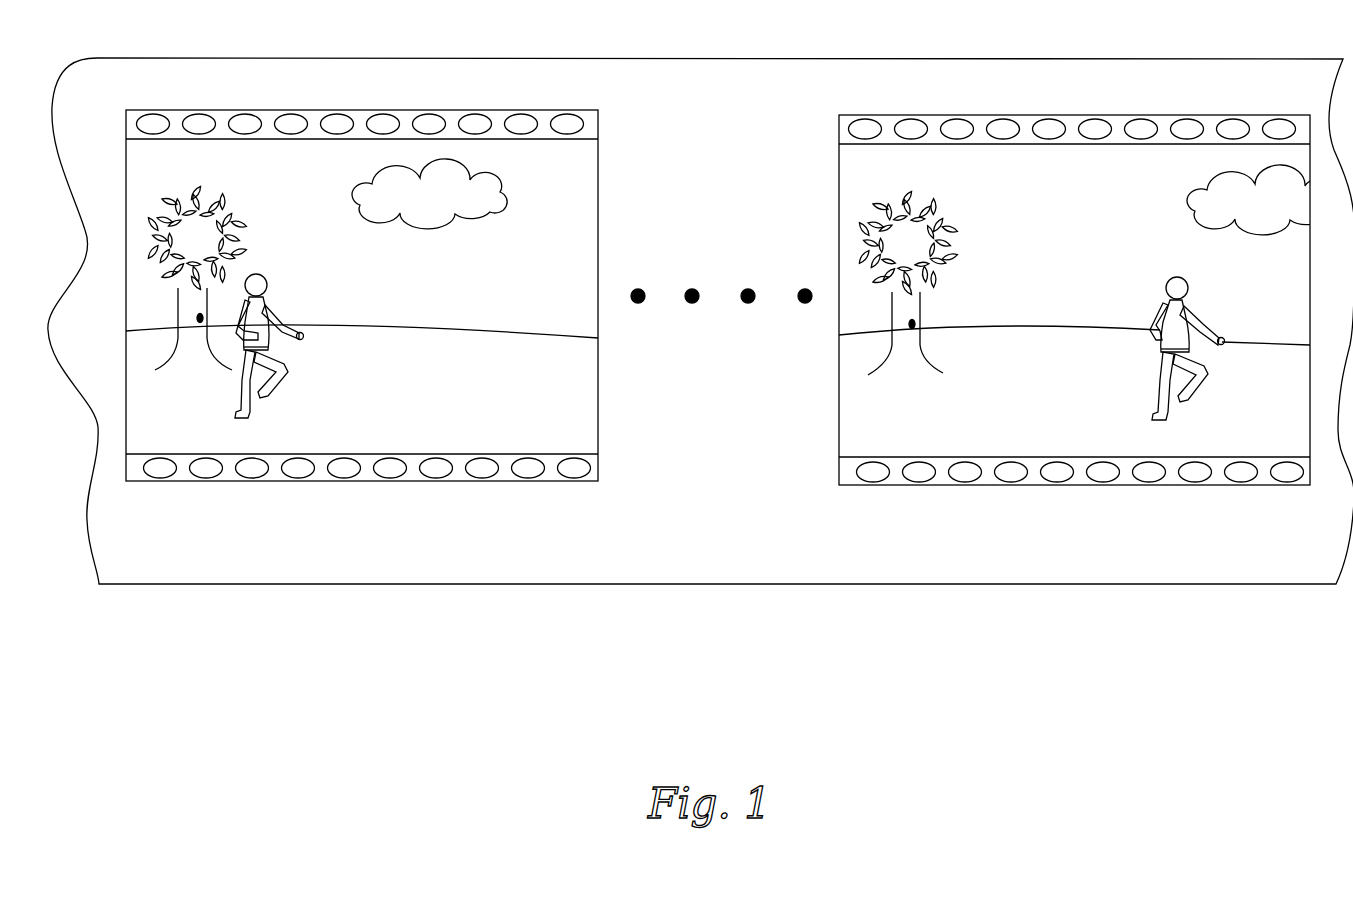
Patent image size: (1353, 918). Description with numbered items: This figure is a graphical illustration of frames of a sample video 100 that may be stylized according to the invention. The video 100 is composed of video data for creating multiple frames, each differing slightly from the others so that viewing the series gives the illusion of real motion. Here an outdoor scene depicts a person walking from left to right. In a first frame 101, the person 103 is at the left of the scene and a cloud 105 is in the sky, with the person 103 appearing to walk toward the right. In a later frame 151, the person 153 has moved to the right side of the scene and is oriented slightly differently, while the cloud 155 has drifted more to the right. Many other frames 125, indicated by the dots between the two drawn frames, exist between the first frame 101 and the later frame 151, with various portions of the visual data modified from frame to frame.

The video 100 is at (755, 584).
The first frame 101 is at (355, 100).
The person 103 is at (287, 303).
The cloud 105 is at (458, 215).
The other frames 125 is at (674, 327).
The later frame 151 is at (920, 103).
The person 153 is at (1145, 283).
The cloud 155 is at (1194, 194).